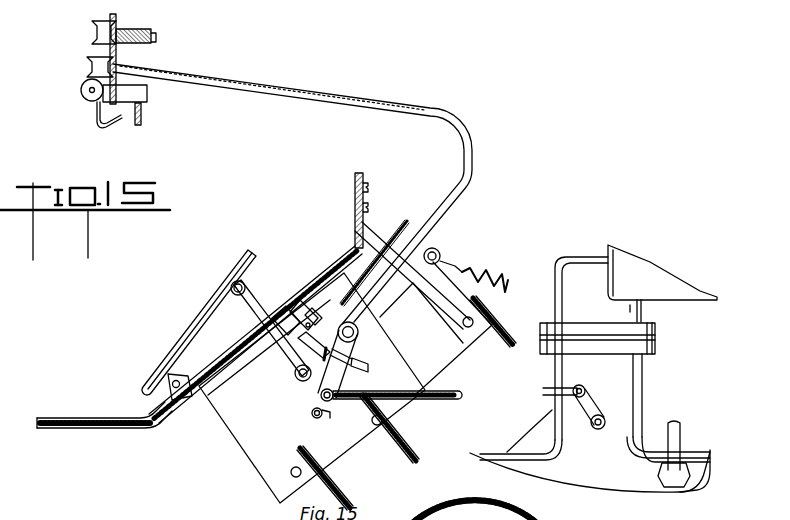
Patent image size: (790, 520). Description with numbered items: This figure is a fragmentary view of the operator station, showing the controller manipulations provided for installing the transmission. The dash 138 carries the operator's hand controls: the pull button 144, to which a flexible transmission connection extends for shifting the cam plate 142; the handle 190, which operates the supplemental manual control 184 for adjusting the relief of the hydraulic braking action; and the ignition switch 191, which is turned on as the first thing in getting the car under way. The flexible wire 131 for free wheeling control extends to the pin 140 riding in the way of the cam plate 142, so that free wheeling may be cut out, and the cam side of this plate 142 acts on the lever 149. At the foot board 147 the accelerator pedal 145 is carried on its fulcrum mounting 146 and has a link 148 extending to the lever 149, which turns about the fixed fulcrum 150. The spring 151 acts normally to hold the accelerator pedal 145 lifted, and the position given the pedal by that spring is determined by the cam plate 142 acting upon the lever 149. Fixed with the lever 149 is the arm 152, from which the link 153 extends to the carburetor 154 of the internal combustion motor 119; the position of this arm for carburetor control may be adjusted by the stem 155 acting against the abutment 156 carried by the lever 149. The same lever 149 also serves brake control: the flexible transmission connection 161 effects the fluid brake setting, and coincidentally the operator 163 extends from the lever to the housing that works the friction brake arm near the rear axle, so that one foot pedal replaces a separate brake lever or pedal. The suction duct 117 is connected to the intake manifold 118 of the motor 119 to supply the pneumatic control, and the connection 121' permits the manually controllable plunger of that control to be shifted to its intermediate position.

The handle 190 is at (94, 30).
The supplemental manual control 184 is at (158, 38).
The pull button 144 is at (90, 64).
The ignition switch 191 is at (82, 97).
The dash 138 is at (99, 125).
The cam plate 142 is at (403, 251).
The foot board 147 is at (150, 408).
The accelerator pedal 145 is at (196, 306).
The fulcrum mounting 146 is at (168, 378).
The link 148 is at (262, 322).
The pin 140 is at (301, 312).
The flexible wire 131 is at (320, 342).
The lever 149 is at (283, 383).
The operator 163 is at (280, 432).
The connection 121' is at (340, 460).
The fixed fulcrum 150 is at (362, 331).
The arm 152 is at (352, 350).
The abutment 156 is at (305, 406).
The stem 155 is at (424, 330).
The flexible transmission connection 161 is at (442, 258).
The spring 151 is at (510, 270).
The carburetor 154 is at (627, 376).
The link 153 is at (556, 392).
The internal combustion motor 119 is at (552, 422).
The suction duct 117 is at (681, 430).
The intake manifold 118 is at (698, 484).